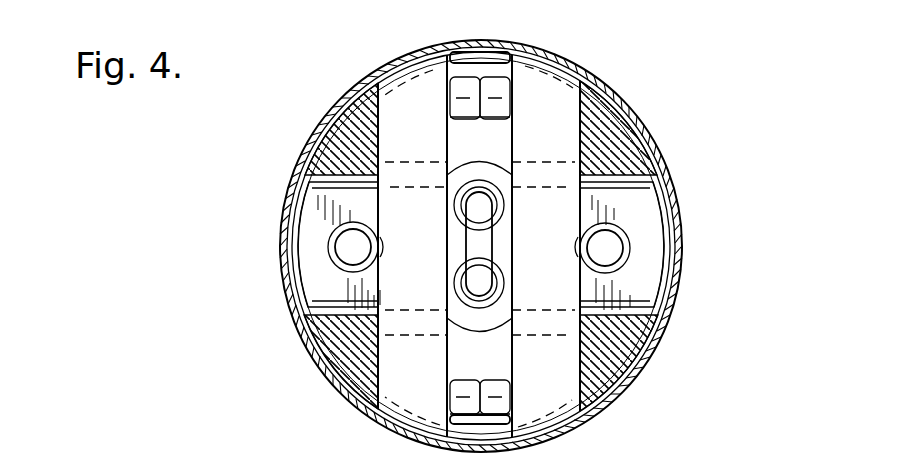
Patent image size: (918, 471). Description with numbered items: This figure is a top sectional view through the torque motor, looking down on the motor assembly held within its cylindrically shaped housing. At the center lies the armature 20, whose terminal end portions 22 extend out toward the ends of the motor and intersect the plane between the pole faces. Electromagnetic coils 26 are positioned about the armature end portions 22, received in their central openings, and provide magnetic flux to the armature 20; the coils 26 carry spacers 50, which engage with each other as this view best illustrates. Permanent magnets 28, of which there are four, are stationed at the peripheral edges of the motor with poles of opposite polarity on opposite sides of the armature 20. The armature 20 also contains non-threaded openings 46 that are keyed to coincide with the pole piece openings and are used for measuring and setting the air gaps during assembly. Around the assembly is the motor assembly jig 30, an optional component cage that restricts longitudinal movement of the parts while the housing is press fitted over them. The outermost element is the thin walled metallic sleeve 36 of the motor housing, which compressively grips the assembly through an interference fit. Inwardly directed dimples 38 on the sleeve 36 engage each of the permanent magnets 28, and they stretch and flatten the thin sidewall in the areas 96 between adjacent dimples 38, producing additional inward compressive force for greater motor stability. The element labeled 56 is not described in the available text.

The armature 20 is at (683, 291).
The terminal end portions 22 is at (283, 278).
The electromagnetic coils 26 is at (413, 85).
The permanent magnets 28 is at (353, 125).
The motor assembly jig 30 is at (461, 45).
The thin walled metallic sleeve 36 is at (290, 316).
The dimples 38 is at (306, 127).
The non-threaded openings 46 is at (333, 247).
The spacers 50 is at (466, 107).
The slot 56 is at (486, 252).
The areas 96 is at (490, 41).